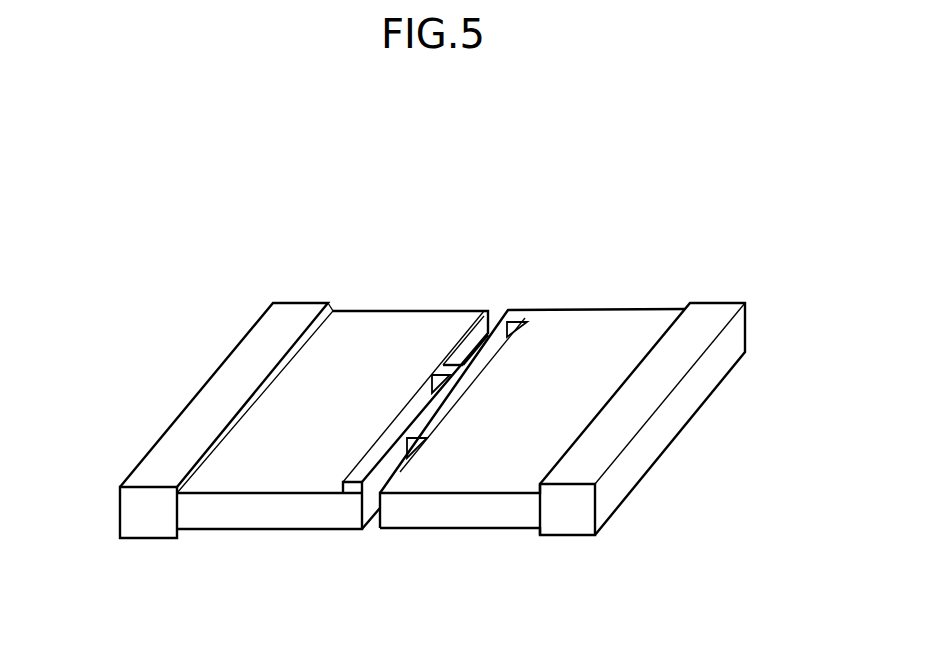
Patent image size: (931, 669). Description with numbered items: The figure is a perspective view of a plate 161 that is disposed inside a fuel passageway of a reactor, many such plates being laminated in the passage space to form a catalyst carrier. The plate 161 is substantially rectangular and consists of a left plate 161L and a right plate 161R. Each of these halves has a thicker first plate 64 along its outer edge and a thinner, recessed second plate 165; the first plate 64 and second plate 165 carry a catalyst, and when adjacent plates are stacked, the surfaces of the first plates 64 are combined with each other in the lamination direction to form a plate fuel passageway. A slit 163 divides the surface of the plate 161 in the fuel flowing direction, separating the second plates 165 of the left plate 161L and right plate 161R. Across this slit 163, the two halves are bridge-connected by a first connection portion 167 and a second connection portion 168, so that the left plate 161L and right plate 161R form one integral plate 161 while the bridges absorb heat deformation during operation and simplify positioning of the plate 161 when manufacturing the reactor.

The plate 161 is at (707, 122).
The left plate 161L is at (185, 508).
The right plate 161R is at (518, 507).
The first plate 64 is at (710, 305).
The slit 163 is at (483, 333).
The second plate 165 is at (277, 453).
The first connection portion 167 is at (430, 423).
The second connection portion 168 is at (478, 340).